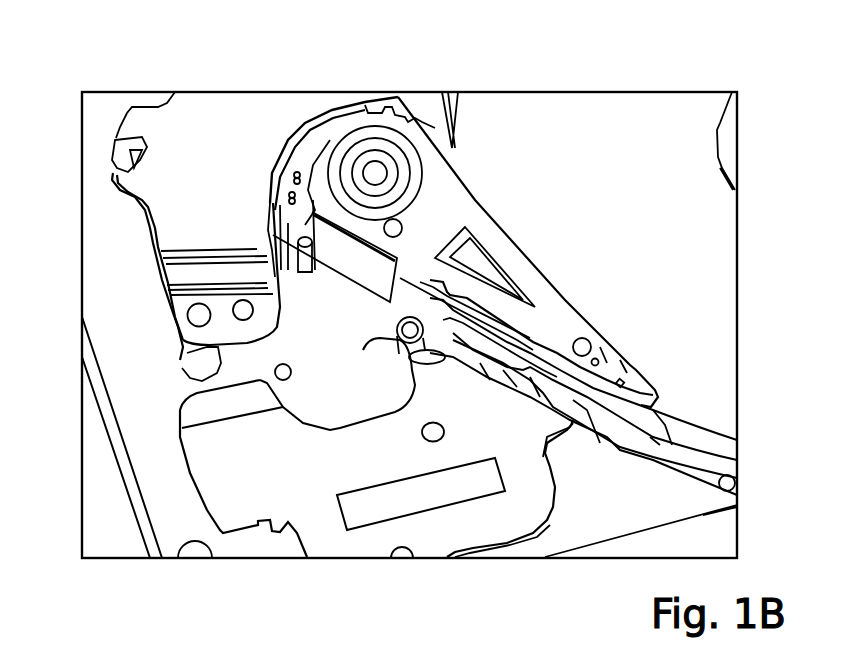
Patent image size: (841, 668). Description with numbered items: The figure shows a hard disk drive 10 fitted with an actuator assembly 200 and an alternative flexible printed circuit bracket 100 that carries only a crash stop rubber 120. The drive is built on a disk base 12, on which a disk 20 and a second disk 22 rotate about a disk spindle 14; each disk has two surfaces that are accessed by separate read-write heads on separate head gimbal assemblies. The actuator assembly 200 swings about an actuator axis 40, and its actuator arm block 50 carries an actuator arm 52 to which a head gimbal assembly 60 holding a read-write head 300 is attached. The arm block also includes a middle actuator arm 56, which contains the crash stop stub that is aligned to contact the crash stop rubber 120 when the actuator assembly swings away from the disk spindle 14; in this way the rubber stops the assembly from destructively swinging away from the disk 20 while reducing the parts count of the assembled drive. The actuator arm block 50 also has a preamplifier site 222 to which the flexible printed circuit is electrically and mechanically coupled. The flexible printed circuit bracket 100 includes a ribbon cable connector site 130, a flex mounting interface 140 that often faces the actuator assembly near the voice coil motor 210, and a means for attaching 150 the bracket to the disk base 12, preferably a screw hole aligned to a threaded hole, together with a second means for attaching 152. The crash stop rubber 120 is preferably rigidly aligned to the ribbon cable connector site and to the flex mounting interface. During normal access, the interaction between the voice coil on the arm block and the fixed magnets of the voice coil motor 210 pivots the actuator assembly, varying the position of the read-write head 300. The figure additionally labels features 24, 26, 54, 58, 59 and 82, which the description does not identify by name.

The hard disk drive 10 is at (67, 95).
The disk base 12 is at (147, 462).
The disk spindle 14 is at (717, 147).
The disk 20 is at (673, 430).
The second disk 22 is at (697, 453).
The flex cable layer 24 is at (682, 473).
The flex cable layer 26 is at (657, 472).
The actuator axis 40 is at (377, 172).
The actuator arm block 50 is at (605, 82).
The actuator arm 52 is at (557, 297).
The head suspension 54 is at (523, 337).
The middle actuator arm 56 is at (513, 382).
The suspension trace 58 is at (533, 377).
The suspension trace 59 is at (548, 410).
The head gimbal assembly 60 is at (628, 370).
The cover 82 is at (693, 260).
The flexible printed circuit bracket 100 is at (568, 572).
The crash stop rubber 120 is at (412, 340).
The ribbon cable connector site 130 is at (330, 515).
The flex mounting interface 140 is at (180, 407).
The means for attaching 150 is at (403, 548).
The second means for attaching 152 is at (423, 437).
The actuator assembly 200 is at (722, 43).
The voice coil motor 210 is at (380, 83).
The preamplifier site 222 is at (353, 265).
The read-write head 300 is at (658, 410).